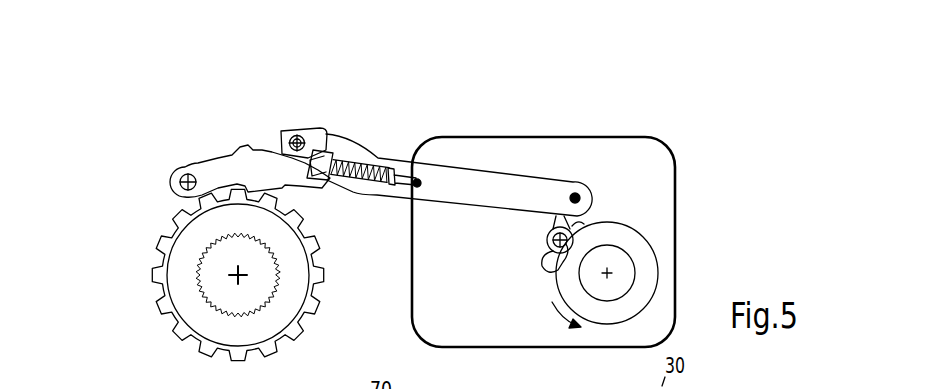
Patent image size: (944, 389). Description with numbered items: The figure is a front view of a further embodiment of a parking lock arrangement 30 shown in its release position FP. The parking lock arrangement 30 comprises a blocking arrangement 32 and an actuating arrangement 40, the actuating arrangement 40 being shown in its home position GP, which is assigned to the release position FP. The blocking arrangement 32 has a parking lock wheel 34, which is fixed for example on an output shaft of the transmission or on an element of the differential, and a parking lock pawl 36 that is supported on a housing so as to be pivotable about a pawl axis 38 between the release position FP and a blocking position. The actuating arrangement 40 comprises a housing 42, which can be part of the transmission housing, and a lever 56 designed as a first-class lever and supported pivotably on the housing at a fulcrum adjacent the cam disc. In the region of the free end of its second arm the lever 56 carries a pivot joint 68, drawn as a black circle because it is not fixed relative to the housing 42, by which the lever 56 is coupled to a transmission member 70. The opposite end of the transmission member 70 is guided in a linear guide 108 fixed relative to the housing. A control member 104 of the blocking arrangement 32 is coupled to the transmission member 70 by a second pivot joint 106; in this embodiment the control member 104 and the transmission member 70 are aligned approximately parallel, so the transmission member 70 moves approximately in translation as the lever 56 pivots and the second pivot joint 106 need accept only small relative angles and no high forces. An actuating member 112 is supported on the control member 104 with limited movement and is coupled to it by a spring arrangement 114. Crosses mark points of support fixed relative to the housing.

The parking lock arrangement 30 is at (708, 158).
The blocking arrangement 32 is at (288, 116).
The parking lock wheel 34 is at (192, 312).
The parking lock pawl 36 is at (228, 165).
The pawl axis 38 is at (180, 181).
The actuating arrangement 40 is at (684, 207).
The housing 42 is at (314, 146).
The lever 56 is at (556, 240).
The pivot joint 68 is at (583, 197).
The transmission member 70 is at (468, 188).
The control member 104 is at (409, 174).
The second pivot joint 106 is at (421, 181).
The linear guide 108 is at (605, 305).
The actuating member 112 is at (333, 178).
The spring arrangement 114 is at (377, 160).
The release position FP is at (173, 143).
The home position GP is at (594, 133).